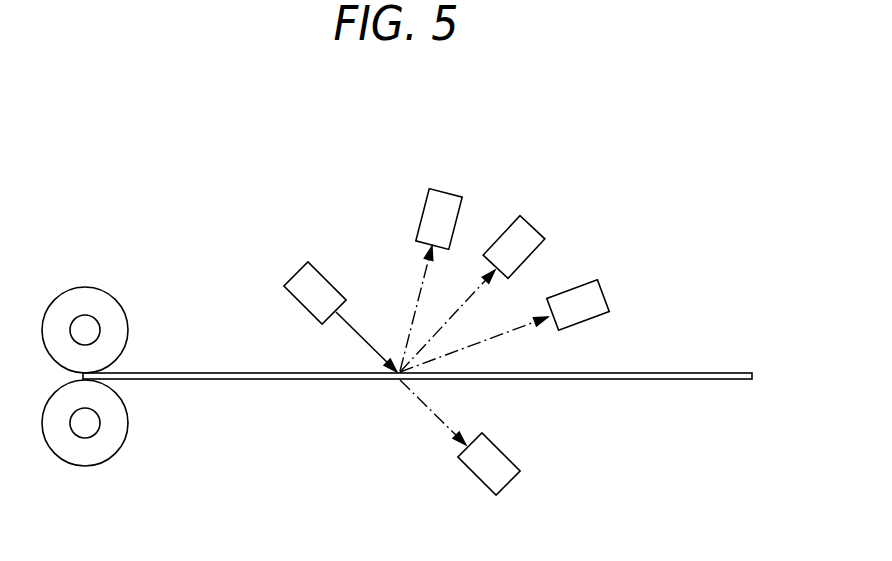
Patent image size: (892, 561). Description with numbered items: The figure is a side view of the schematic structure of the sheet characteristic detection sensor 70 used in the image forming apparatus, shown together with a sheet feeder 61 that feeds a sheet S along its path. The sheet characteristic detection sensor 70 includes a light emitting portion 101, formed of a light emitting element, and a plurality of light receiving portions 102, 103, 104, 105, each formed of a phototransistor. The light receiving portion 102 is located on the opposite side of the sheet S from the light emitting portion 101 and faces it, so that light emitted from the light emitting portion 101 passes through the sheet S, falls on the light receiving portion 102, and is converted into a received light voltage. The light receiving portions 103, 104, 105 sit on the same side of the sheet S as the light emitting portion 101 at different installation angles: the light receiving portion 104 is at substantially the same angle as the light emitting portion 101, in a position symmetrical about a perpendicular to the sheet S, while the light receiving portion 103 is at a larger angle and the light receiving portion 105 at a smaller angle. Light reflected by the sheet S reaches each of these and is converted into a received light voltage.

The sheet feeder 61 is at (85, 287).
The sheet S is at (228, 372).
The sheet characteristic detection sensor 70 is at (345, 160).
The light emitting portion 101 is at (308, 263).
The light receiving portion 102 is at (472, 474).
The light receiving portion 103 is at (448, 190).
The light receiving portion 104 is at (537, 225).
The light receiving portion 105 is at (583, 283).